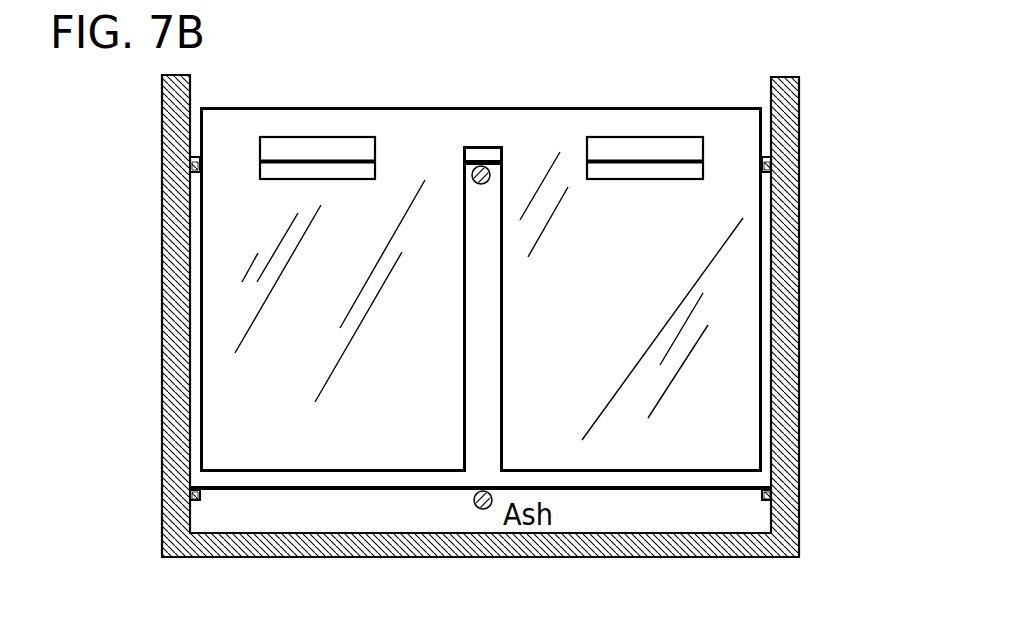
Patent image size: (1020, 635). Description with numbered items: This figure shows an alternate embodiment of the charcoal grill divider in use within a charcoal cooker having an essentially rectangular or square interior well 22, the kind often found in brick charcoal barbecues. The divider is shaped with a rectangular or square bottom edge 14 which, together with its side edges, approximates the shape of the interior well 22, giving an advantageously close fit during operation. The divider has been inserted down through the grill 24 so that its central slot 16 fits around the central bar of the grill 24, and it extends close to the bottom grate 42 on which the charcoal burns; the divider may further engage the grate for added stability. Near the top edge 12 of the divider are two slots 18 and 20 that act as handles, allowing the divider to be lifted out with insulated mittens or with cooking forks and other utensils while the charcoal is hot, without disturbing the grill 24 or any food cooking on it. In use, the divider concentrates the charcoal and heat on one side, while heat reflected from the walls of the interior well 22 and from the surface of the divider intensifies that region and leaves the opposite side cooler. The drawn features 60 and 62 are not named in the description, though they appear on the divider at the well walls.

The top edge 12 is at (695, 107).
The bottom edge 14 is at (703, 468).
The central slot 16 is at (482, 430).
The slot 18 is at (305, 137).
The slot 20 is at (635, 137).
The interior well 22 is at (163, 240).
The grill 24 is at (613, 160).
The bottom grate 42 is at (248, 488).
The left side wall gap 60 is at (202, 355).
The right side wall gap 62 is at (762, 296).